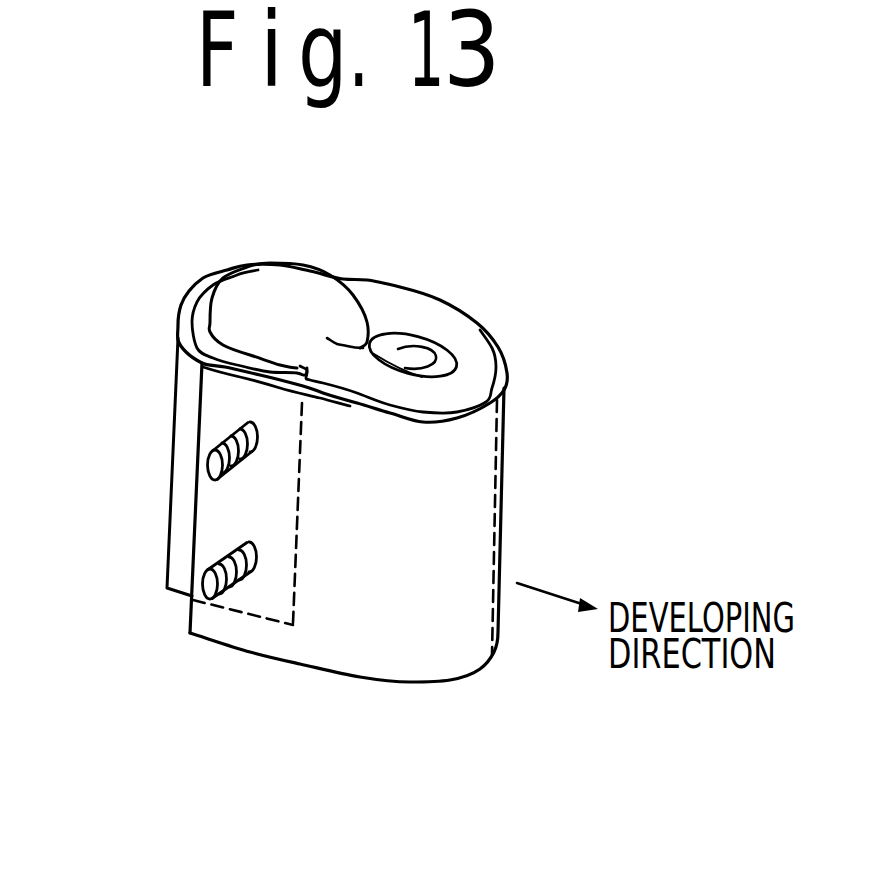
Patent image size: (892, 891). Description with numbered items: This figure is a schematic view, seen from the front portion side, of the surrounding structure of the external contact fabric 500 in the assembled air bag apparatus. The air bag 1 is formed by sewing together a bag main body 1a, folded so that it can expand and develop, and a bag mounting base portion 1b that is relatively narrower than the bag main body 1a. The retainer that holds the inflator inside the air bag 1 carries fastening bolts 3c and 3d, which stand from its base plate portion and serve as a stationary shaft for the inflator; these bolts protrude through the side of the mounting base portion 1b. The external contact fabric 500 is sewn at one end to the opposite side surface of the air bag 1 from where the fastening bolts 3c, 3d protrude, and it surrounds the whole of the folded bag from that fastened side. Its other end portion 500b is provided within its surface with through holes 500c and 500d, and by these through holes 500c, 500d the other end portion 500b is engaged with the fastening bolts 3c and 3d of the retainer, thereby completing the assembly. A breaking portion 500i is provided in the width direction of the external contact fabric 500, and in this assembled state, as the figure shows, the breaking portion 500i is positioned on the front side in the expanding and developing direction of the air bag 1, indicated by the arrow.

The air bag 1 is at (302, 184).
The bag main body 1a is at (406, 307).
The bag mounting base portion 1b is at (248, 287).
The fastening bolt 3c is at (205, 465).
The fastening bolt 3d is at (205, 586).
The external contact fabric 500 is at (322, 630).
The other end portion 500b is at (197, 493).
The through hole 500c is at (246, 428).
The through hole 500d is at (234, 547).
The breaking portion 500i is at (499, 528).